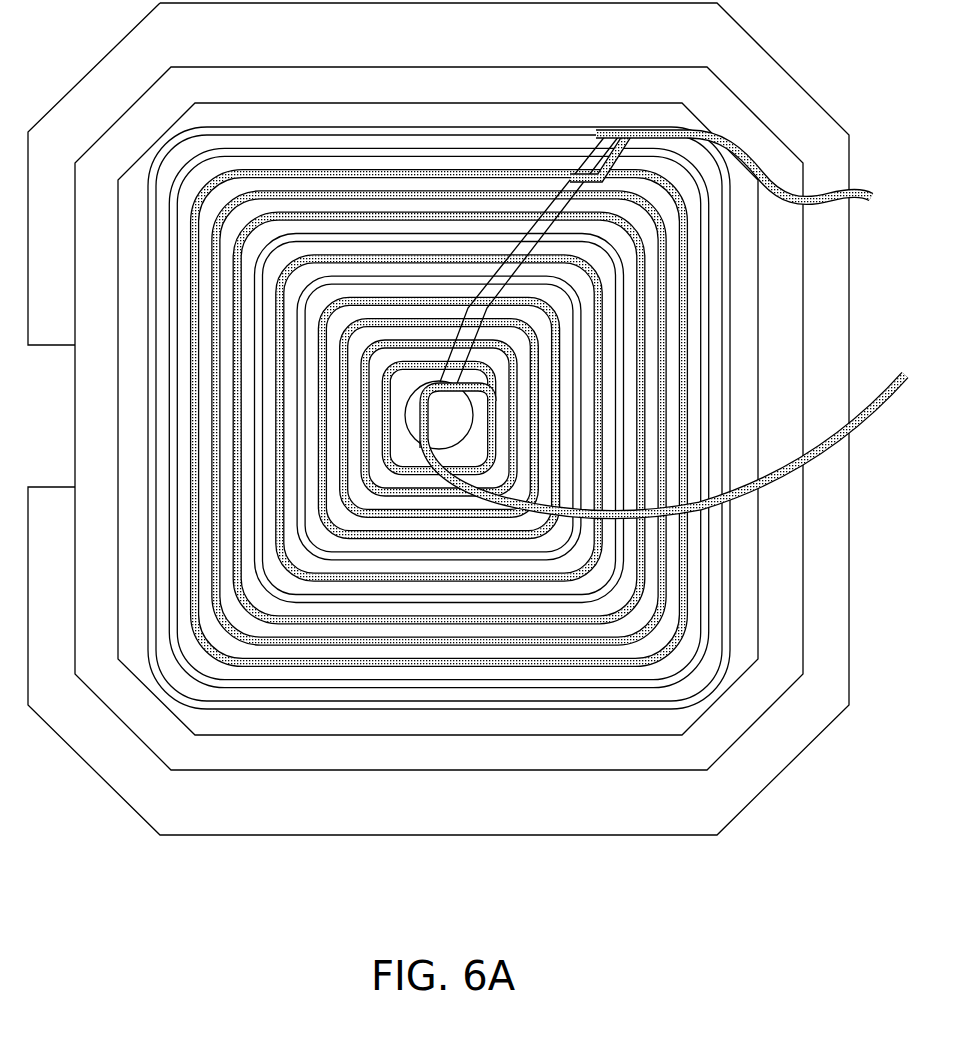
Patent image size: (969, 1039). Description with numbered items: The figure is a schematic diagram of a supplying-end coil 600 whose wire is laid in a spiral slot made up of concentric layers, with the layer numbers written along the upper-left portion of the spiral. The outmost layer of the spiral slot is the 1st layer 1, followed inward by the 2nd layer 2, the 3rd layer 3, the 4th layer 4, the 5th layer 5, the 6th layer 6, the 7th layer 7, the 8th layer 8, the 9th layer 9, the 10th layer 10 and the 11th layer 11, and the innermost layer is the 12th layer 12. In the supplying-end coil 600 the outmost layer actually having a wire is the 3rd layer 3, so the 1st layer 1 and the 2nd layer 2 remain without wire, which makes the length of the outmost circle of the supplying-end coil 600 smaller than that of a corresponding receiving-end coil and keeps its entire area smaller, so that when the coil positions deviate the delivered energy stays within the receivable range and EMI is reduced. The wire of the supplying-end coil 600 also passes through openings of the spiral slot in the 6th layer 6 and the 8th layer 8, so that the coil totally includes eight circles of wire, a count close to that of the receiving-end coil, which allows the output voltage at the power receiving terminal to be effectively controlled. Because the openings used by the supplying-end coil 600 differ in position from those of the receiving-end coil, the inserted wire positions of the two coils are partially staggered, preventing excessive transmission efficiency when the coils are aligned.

The supplying-end coil 600 is at (466, 419).
The 1st layer of the spiral slot 1 is at (439, 412).
The 2nd layer of the spiral slot 2 is at (438, 412).
The 3rd layer of the spiral slot 3 is at (439, 412).
The 4th layer of the spiral slot 4 is at (439, 412).
The 5th layer of the spiral slot 5 is at (439, 412).
The 6th layer of the spiral slot 6 is at (439, 412).
The 7th layer of the spiral slot 7 is at (439, 412).
The 8th layer of the spiral slot 8 is at (439, 413).
The 9th layer of the spiral slot 9 is at (438, 412).
The 10th layer of the spiral slot 10 is at (439, 412).
The 11th layer of the spiral slot 11 is at (439, 412).
The 12th layer of the spiral slot 12 is at (438, 413).